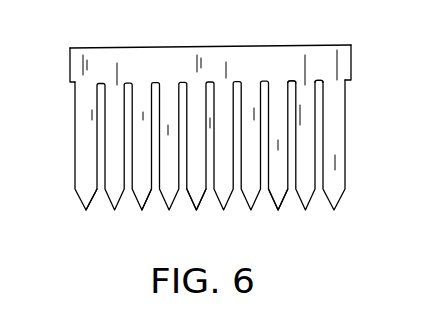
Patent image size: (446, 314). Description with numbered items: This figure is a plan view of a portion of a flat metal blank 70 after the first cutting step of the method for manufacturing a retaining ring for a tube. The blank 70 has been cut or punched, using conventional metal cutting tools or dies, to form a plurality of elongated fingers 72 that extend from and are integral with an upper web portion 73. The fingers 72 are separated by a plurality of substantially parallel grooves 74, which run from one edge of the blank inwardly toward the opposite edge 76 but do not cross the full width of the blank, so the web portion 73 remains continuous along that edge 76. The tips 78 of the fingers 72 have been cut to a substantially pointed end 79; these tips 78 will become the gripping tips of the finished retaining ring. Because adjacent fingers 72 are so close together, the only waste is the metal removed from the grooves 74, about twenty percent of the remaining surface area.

The flat metal blank 70 is at (216, 131).
The elongated fingers 72 is at (346, 172).
The upper web portion 73 is at (210, 60).
The grooves 74 is at (292, 107).
The opposite edge 76 is at (106, 48).
The tips 78 is at (92, 193).
The pointed end 79 is at (200, 210).